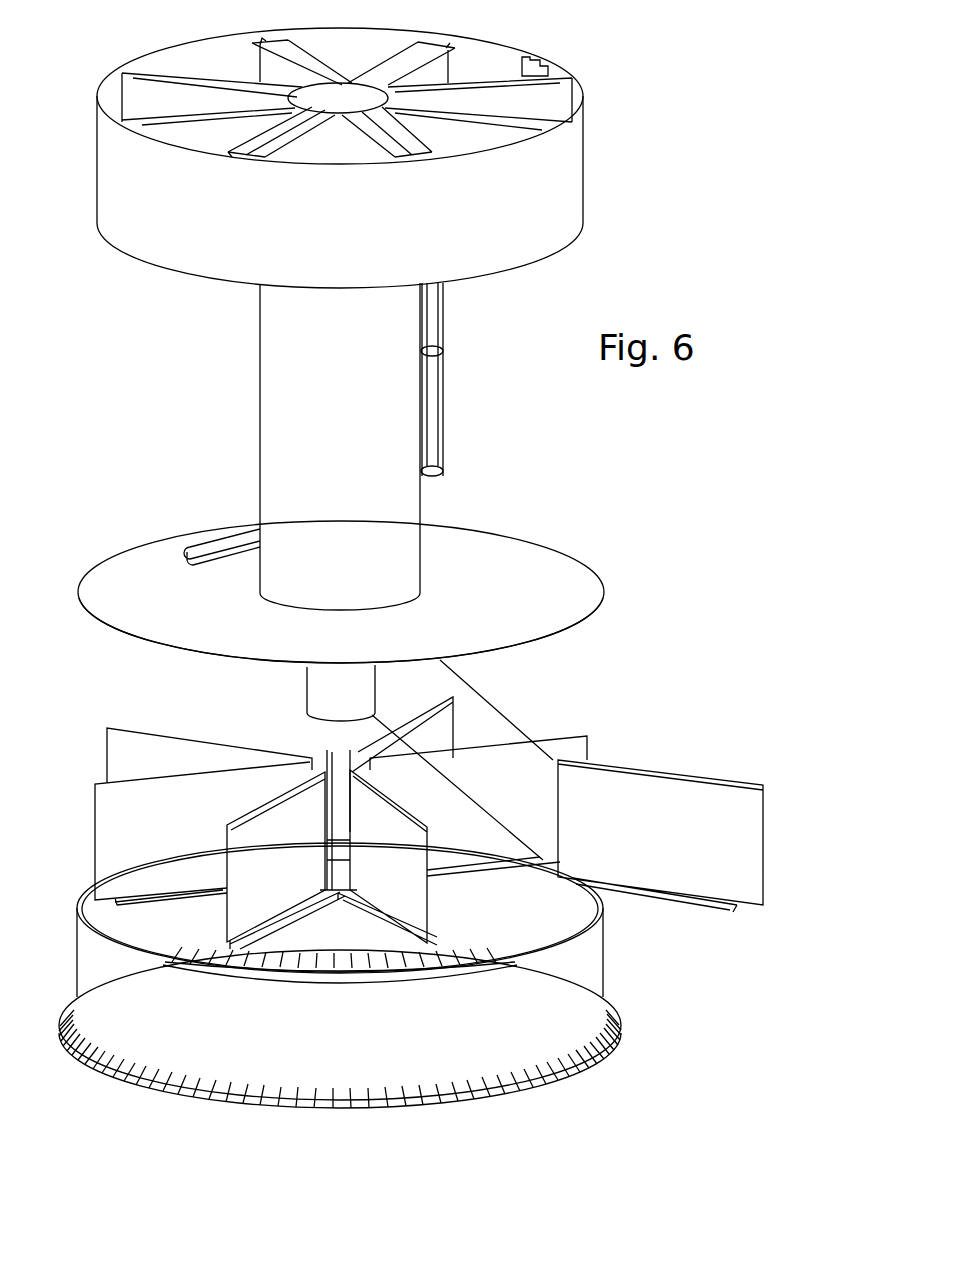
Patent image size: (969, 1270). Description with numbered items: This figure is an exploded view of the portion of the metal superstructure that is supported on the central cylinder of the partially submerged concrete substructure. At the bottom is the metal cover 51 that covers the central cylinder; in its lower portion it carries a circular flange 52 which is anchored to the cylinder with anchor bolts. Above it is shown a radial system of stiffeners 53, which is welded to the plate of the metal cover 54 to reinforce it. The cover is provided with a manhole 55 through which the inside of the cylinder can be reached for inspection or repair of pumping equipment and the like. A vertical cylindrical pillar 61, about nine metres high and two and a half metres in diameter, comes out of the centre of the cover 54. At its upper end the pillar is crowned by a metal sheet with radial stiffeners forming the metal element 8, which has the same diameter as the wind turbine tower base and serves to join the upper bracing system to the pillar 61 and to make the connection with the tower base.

The metal element 8 is at (563, 190).
The vertical cylindrical pillar 61 is at (280, 428).
The plate of the metal cover 54 is at (557, 567).
The manhole 55 is at (208, 548).
The radial system of stiffeners 53 is at (572, 742).
The metal cover 51 is at (588, 975).
The circular flange 52 is at (610, 1053).